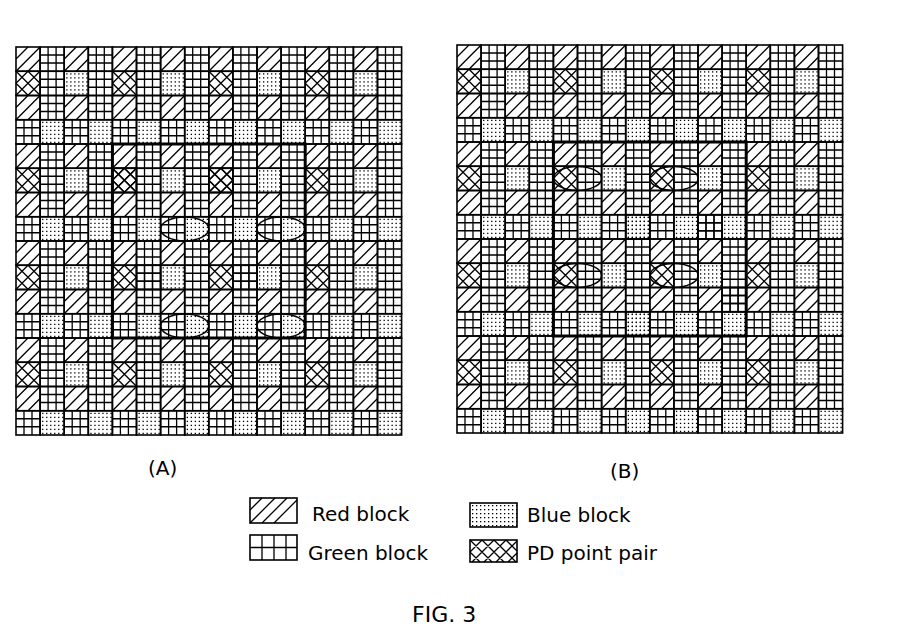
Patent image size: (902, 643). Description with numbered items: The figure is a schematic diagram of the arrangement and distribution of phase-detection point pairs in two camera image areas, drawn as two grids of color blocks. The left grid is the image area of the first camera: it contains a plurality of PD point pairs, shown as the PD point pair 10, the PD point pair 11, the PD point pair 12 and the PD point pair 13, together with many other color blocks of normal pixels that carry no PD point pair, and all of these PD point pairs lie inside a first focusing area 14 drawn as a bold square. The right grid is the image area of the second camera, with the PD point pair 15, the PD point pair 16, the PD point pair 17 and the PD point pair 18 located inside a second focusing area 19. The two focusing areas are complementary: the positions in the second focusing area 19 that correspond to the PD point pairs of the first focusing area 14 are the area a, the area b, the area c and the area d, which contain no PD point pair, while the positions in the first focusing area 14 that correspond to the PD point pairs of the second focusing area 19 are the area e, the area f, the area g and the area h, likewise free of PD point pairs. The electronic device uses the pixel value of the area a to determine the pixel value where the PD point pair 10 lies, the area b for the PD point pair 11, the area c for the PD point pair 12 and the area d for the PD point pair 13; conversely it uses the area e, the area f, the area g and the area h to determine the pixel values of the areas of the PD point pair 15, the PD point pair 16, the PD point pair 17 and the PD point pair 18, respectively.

The PD point pair 10 is at (128, 177).
The PD point pair 11 is at (213, 172).
The PD point pair 12 is at (140, 283).
The PD point pair 13 is at (237, 280).
The first focusing area 14 is at (308, 144).
The PD point pair 15 is at (632, 227).
The PD point pair 16 is at (718, 213).
The PD point pair 17 is at (630, 320).
The PD point pair 18 is at (738, 298).
The second focusing area 19 is at (748, 142).
The area a is at (578, 166).
The area b is at (673, 166).
The area c is at (583, 287).
The area d is at (694, 283).
The area e is at (190, 217).
The area f is at (283, 217).
The area g is at (186, 338).
The area h is at (286, 338).